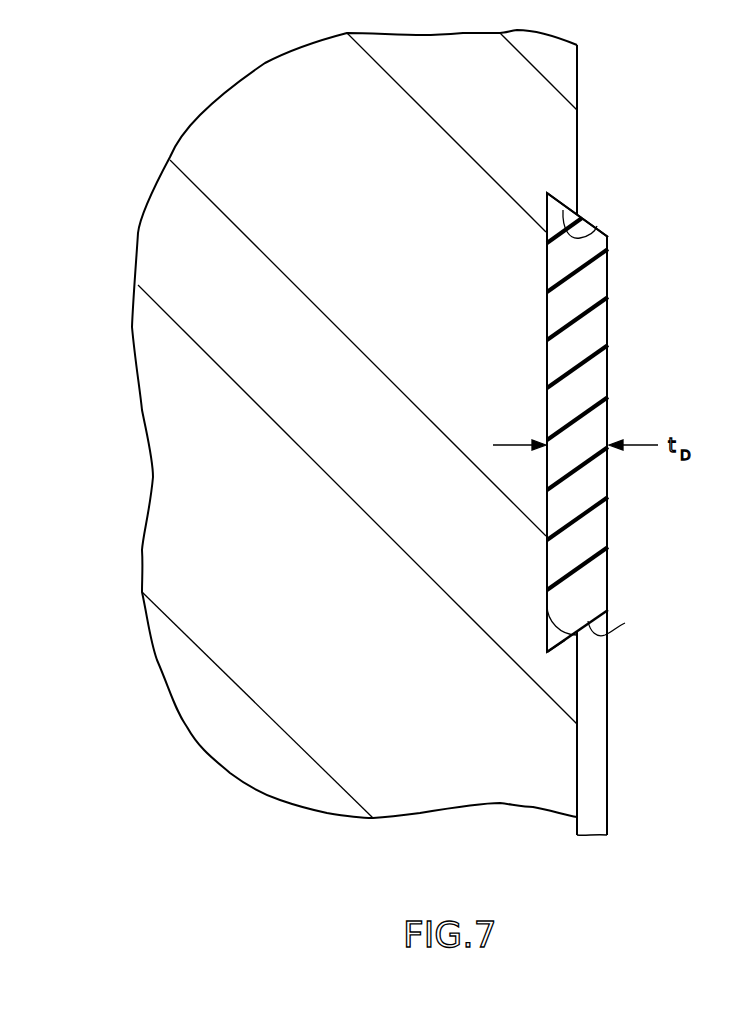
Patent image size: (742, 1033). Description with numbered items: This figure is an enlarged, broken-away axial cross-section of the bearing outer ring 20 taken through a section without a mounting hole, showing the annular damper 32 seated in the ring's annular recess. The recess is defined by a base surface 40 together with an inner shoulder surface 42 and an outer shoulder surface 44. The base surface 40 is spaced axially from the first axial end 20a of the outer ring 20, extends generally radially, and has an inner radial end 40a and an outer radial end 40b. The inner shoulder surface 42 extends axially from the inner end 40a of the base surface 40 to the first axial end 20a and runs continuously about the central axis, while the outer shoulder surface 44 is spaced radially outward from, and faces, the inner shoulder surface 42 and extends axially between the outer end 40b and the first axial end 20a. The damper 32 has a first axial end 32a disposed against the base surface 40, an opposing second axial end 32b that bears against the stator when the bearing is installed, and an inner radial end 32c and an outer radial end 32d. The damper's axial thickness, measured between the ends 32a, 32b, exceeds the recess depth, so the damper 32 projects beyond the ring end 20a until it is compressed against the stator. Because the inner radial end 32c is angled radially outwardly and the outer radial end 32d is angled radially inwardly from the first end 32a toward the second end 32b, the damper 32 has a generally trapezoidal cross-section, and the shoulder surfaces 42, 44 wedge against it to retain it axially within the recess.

The bearing outer ring 20 is at (202, 117).
The first axial end 20a is at (580, 768).
The annular damper 32 is at (610, 663).
The first axial end 32a is at (546, 303).
The second axial end 32b is at (610, 288).
The inner radial end 32c is at (625, 623).
The outer radial end 32d is at (588, 220).
The base surface 40 is at (549, 356).
The inner radial end 40a is at (545, 647).
The outer radial end 40b is at (543, 197).
The inner shoulder surface 42 is at (567, 637).
The outer shoulder surface 44 is at (597, 230).